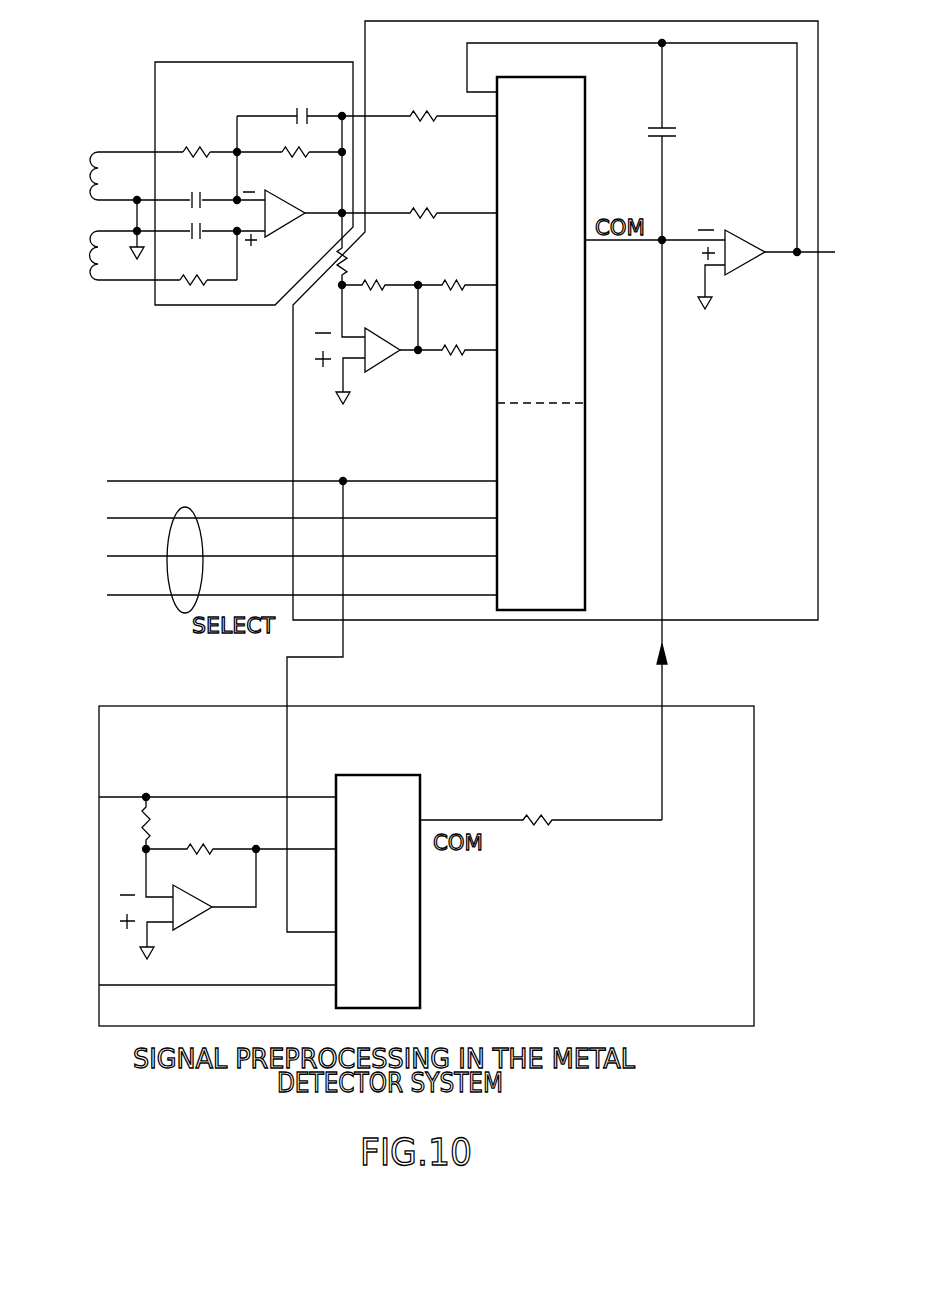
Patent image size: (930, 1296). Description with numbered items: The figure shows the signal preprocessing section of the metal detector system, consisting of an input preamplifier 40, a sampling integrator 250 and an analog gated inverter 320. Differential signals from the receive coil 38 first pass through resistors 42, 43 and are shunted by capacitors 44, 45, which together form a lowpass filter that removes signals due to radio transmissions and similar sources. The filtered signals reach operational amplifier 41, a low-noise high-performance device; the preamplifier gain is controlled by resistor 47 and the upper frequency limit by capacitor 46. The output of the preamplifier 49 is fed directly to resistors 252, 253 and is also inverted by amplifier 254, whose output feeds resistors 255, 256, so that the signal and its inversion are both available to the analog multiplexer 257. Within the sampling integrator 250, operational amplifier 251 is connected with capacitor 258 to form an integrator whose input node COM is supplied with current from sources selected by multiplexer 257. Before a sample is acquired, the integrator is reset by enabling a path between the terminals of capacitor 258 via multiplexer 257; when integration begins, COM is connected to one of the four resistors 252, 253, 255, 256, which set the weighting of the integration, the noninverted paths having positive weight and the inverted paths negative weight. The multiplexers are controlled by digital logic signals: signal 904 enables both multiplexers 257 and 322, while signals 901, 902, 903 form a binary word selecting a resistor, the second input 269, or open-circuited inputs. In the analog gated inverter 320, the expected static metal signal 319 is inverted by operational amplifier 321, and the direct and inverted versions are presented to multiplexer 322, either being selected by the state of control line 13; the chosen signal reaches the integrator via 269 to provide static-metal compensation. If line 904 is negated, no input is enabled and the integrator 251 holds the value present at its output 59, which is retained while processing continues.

The input preamplifier 40 is at (275, 50).
The receive coil 38 is at (94, 200).
The resistor 42 is at (198, 139).
The resistor 43 is at (208, 254).
The capacitor 44 is at (204, 191).
The capacitor 45 is at (178, 221).
The capacitor 46 is at (294, 99).
The resistor 47 is at (285, 139).
The operational amplifier 41 is at (292, 233).
The output of the preamplifier 49 is at (329, 151).
The sampling integrator 250 is at (831, 170).
The operational amplifier 251 is at (737, 258).
The resistor 252 is at (419, 104).
The resistor 253 is at (419, 198).
The amplifier 254 is at (366, 344).
The resistor 255 is at (457, 273).
The resistor 256 is at (457, 338).
The analog multiplexer 257 is at (632, 326).
The capacitor 258 is at (683, 141).
The integrator output 59 is at (811, 236).
The second input 269 is at (695, 530).
The enable signal 904 is at (275, 695).
The select signal 903 is at (275, 522).
The select signal 902 is at (277, 559).
The select signal 901 is at (277, 597).
The analog gated inverter 320 is at (768, 872).
The operational amplifier 321 is at (188, 904).
The analog multiplexer 322 is at (378, 878).
The expected static metal signal 319 is at (188, 779).
The control line 13 is at (204, 979).